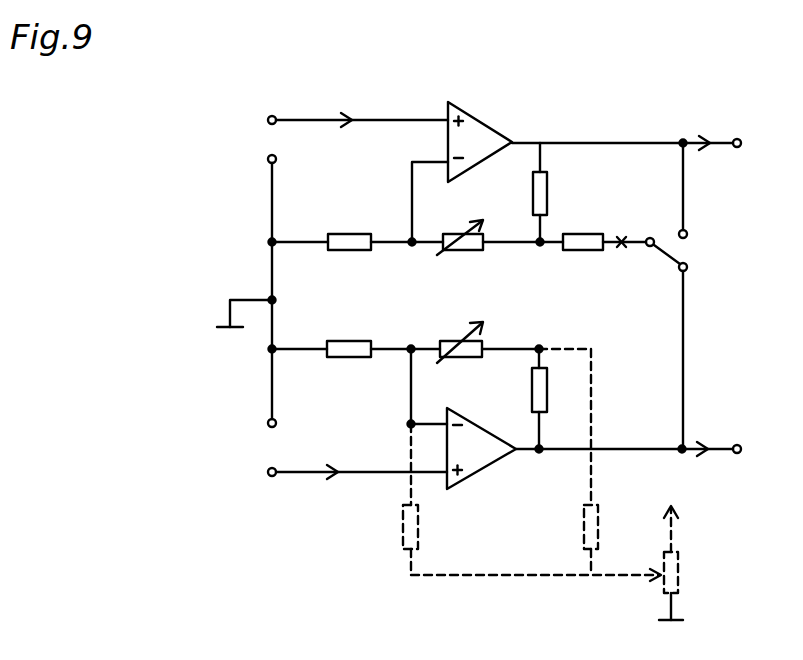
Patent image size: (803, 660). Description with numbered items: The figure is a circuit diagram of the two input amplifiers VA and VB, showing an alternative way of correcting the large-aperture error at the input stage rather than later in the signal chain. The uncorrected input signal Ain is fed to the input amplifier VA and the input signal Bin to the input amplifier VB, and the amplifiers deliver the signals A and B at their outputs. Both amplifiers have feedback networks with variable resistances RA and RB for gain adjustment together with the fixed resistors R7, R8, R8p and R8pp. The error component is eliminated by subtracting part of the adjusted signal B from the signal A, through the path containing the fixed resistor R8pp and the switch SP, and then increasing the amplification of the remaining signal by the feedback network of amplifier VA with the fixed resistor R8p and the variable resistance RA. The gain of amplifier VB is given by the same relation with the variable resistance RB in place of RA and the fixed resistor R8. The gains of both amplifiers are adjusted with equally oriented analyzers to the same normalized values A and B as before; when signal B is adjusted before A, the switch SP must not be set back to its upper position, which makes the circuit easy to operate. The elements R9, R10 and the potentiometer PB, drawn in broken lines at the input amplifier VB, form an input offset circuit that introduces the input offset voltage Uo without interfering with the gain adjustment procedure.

The input signal A Ain is at (344, 98).
The input signal B Bin is at (336, 453).
The signal A is at (627, 125).
The signal B is at (628, 431).
The fixed resistor R7 is at (357, 276).
The fixed resistor R8 is at (556, 399).
The fixed resistor R8' R8p is at (560, 192).
The fixed resistor R8'' R8pp is at (604, 222).
The resistor R9 is at (382, 499).
The resistor R10 is at (591, 462).
The variable resistance RA is at (460, 254).
The variable resistance RB is at (455, 332).
The input amplifier VA is at (480, 125).
The input amplifier VB is at (481, 460).
The switch SP is at (686, 296).
The potentiometer PB is at (690, 552).
The input offset voltage Uo is at (687, 495).